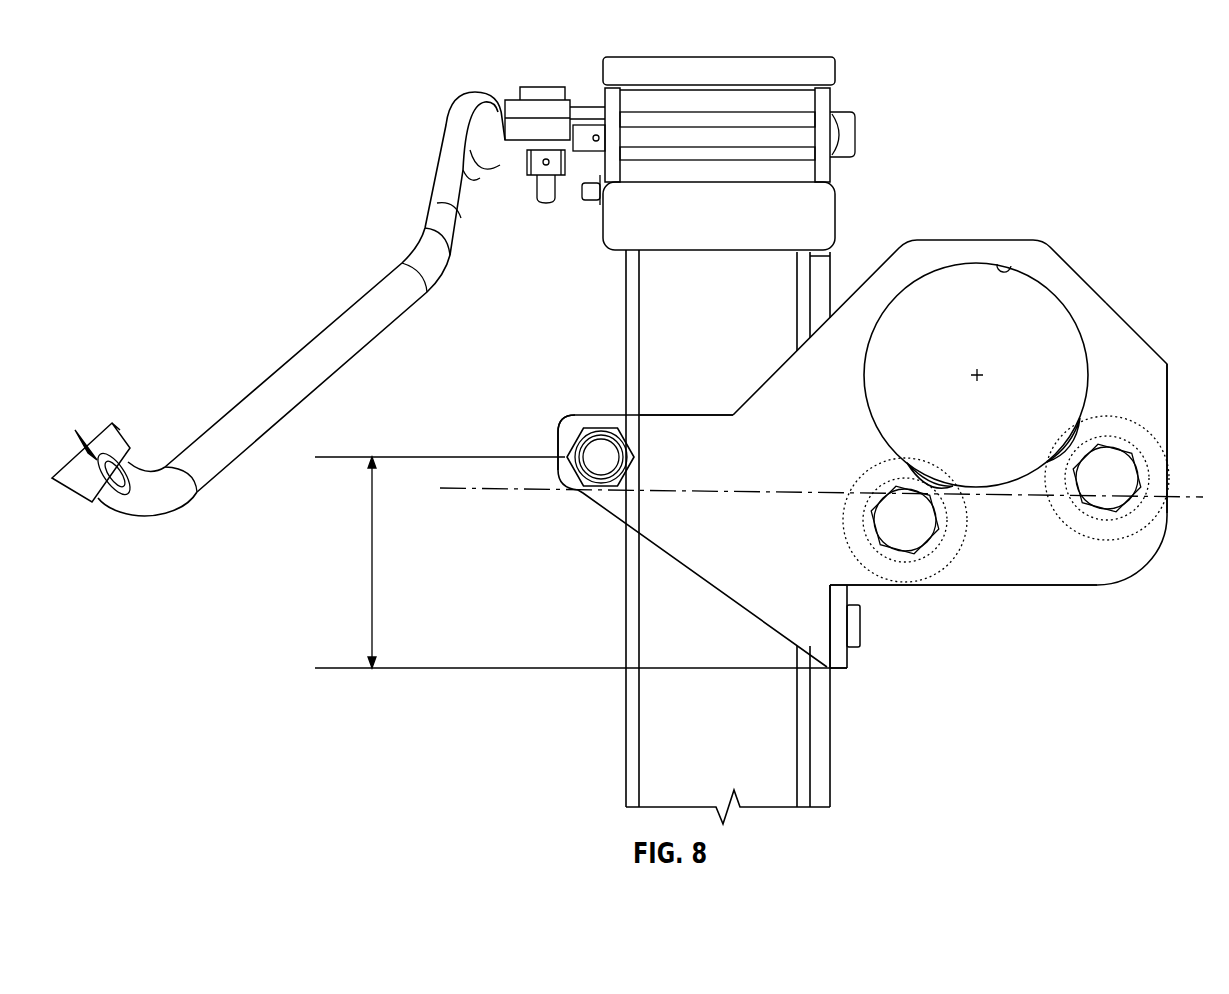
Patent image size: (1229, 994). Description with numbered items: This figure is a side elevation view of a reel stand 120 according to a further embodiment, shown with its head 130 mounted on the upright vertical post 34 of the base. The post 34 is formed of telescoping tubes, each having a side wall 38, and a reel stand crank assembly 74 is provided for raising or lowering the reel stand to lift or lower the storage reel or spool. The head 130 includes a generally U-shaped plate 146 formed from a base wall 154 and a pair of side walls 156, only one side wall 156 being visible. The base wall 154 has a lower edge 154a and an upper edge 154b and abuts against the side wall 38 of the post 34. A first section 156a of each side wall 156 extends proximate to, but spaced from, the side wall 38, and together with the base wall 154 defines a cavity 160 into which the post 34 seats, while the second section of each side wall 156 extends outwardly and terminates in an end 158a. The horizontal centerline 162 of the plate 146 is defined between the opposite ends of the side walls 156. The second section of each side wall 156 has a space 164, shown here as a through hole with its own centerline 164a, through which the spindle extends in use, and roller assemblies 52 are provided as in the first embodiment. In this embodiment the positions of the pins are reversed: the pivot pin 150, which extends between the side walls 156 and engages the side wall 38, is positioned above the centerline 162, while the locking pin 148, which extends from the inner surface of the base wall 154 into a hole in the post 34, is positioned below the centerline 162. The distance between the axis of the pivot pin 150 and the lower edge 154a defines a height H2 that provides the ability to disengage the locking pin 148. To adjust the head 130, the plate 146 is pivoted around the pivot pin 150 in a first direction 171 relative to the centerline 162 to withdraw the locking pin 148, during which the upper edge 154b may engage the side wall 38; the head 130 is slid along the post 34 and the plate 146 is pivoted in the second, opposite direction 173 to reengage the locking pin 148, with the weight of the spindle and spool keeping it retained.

The reel stand crank assembly 74 is at (436, 120).
The post 34 is at (640, 702).
The side wall 38 is at (822, 744).
The height H2 is at (372, 583).
The centerline 162 is at (483, 490).
The reel stand 120 is at (1157, 258).
The plate 146 is at (1044, 232).
The head 130 is at (1099, 282).
The space 164 is at (1010, 264).
The centerline 164a is at (976, 374).
The roller assemblies 52 is at (927, 466).
The side wall 156 is at (730, 547).
The first section 156a is at (657, 432).
The end 158a is at (557, 446).
The cavity 160 is at (673, 410).
The base wall 154 is at (835, 668).
The lower edge 154a is at (838, 669).
The upper edge 154b is at (842, 585).
The locking pin 148 is at (862, 638).
The pivot pin 150 is at (600, 459).
The first direction 171 is at (566, 431).
The second direction 173 is at (597, 498).